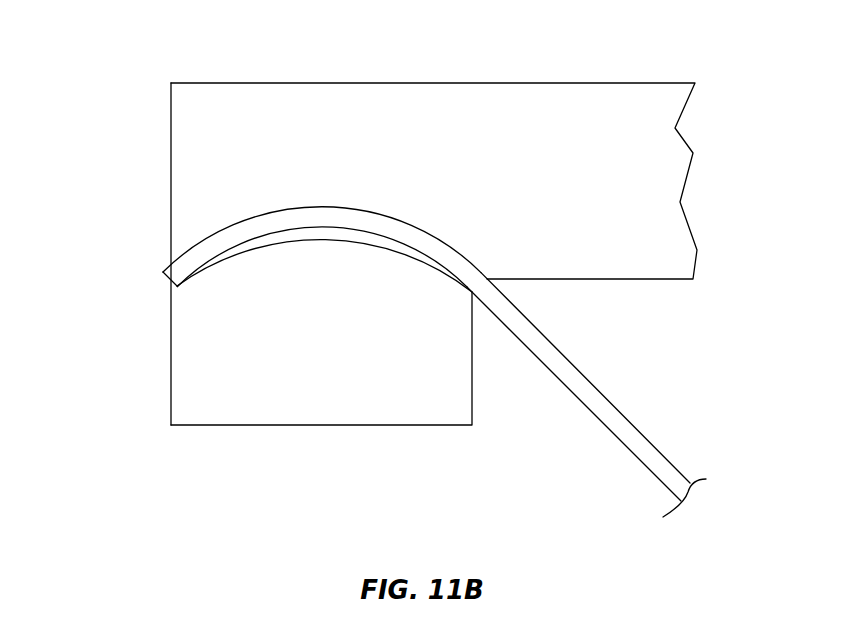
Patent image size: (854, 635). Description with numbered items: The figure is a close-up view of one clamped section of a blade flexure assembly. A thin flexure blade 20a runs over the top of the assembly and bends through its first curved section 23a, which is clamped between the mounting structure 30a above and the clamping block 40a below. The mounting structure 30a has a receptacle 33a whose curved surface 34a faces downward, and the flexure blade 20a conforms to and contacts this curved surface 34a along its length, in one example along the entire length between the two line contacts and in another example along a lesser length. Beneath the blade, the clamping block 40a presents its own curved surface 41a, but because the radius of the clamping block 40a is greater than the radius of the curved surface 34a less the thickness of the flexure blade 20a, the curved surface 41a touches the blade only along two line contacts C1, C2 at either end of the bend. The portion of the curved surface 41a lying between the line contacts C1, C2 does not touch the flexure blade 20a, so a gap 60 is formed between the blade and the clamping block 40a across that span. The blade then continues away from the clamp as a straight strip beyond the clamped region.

The flexure blade 20a is at (633, 442).
The first curved section 23a is at (280, 222).
The mounting structure 30a is at (395, 124).
The receptacle 33a is at (324, 192).
The curved surface 34a is at (302, 206).
The clamping block 40a is at (451, 402).
The curved surface 41a is at (278, 245).
The gap 60 is at (330, 229).
The line contact C1 is at (184, 292).
The line contact C2 is at (472, 293).